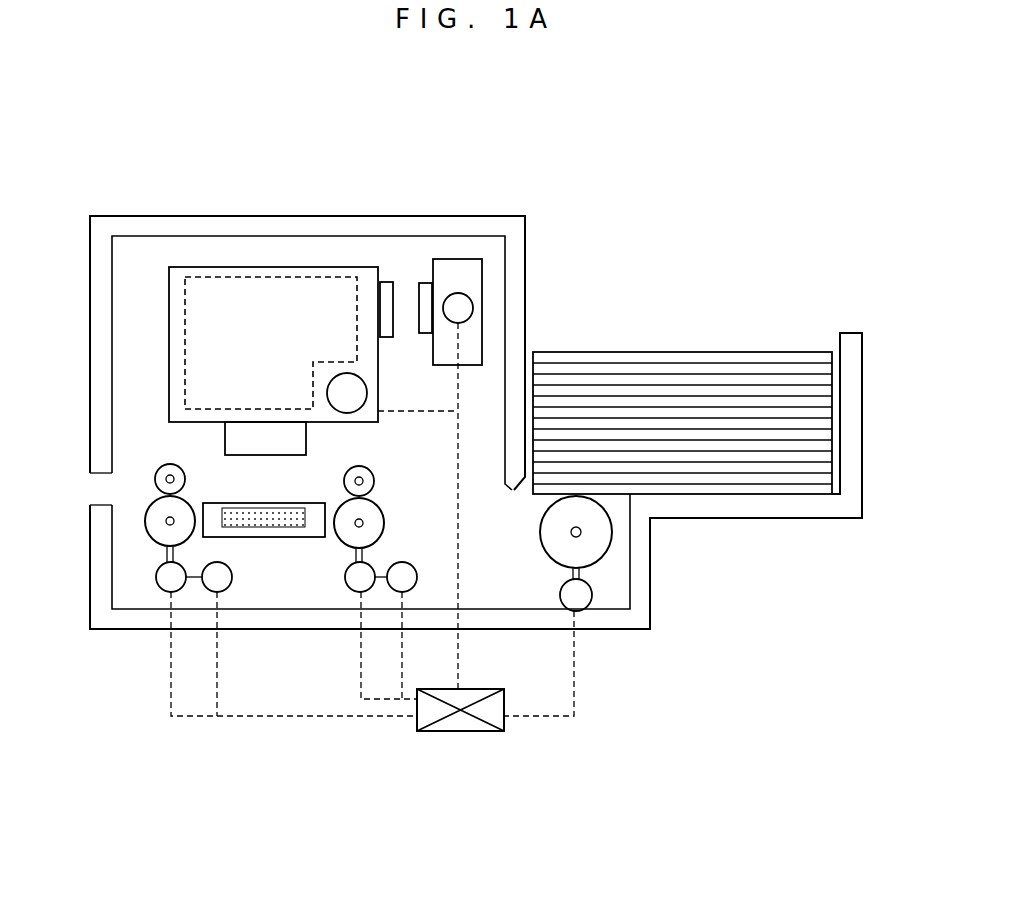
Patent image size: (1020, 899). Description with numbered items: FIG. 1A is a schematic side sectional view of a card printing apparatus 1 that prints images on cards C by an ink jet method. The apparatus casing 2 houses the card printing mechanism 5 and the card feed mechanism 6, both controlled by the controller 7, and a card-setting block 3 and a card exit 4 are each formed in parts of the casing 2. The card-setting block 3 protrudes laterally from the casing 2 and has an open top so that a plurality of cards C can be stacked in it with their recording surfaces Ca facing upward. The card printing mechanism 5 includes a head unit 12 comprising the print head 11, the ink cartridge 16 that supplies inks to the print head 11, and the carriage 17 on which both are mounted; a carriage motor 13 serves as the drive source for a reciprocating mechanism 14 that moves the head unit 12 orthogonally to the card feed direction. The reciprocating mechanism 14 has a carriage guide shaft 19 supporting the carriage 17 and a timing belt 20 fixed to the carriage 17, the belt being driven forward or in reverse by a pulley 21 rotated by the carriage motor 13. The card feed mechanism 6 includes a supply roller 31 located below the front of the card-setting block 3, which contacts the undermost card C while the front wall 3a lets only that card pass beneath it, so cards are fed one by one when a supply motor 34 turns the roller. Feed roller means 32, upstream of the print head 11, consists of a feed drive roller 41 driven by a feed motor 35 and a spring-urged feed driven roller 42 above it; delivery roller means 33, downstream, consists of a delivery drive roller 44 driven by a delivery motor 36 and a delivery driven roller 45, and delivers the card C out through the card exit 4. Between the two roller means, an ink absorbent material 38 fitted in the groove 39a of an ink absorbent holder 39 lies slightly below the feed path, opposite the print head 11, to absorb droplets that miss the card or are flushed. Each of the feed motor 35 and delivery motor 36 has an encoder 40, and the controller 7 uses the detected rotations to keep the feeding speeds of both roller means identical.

The card printing apparatus 1 is at (462, 128).
The apparatus casing 2 is at (170, 215).
The card-setting block 3 is at (864, 345).
The front wall 3a is at (514, 473).
The card exit 4 is at (98, 494).
The card printing mechanism 5 is at (285, 236).
The card feed mechanism 6 is at (279, 613).
The controller 7 is at (456, 732).
The print head 11 is at (293, 440).
The head unit 12 is at (128, 355).
The carriage motor 13 is at (471, 300).
The reciprocating mechanism 14 is at (404, 234).
The ink cartridge 16 is at (216, 276).
The carriage 17 is at (364, 352).
The carriage guide shaft 19 is at (352, 404).
The timing belt 20 is at (385, 281).
The pulley 21 is at (424, 282).
The supply roller 31 is at (612, 537).
The feed roller means 32 is at (390, 495).
The delivery roller means 33 is at (120, 515).
The supply motor 34 is at (592, 596).
The feed motor 35 is at (352, 586).
The delivery motor 36 is at (158, 584).
The ink absorbent material 38 is at (268, 512).
The ink absorbent holder 39 is at (263, 540).
The groove 39a is at (288, 518).
The encoder 40 is at (417, 580).
The feed drive roller 41 is at (384, 523).
The feed driven roller 42 is at (375, 479).
The delivery drive roller 44 is at (149, 540).
The delivery driven roller 45 is at (158, 466).
The card C is at (823, 357).
The recording surface Ca is at (724, 343).